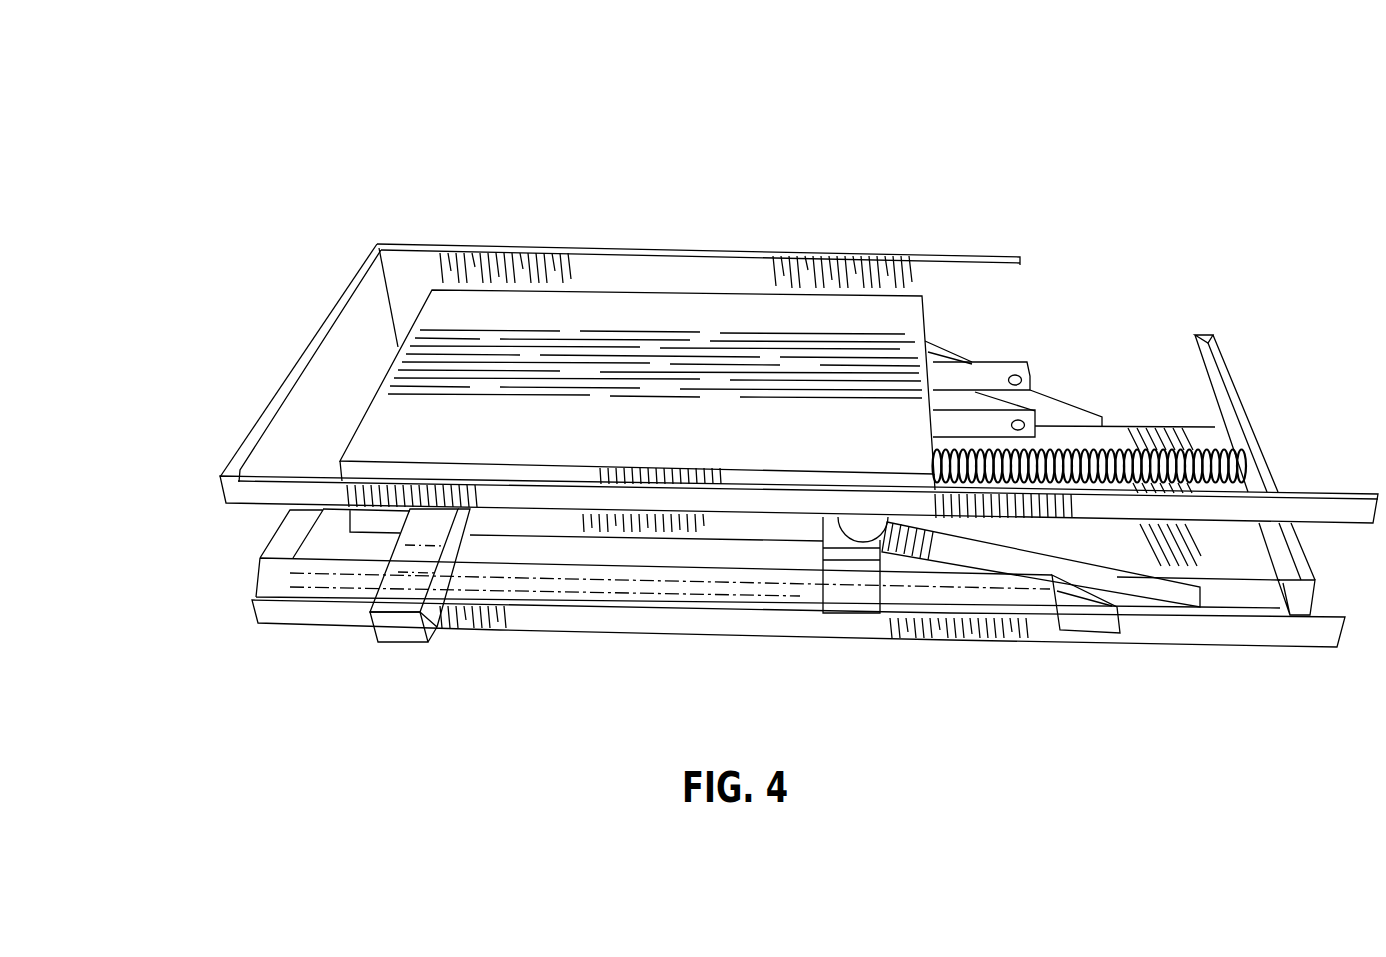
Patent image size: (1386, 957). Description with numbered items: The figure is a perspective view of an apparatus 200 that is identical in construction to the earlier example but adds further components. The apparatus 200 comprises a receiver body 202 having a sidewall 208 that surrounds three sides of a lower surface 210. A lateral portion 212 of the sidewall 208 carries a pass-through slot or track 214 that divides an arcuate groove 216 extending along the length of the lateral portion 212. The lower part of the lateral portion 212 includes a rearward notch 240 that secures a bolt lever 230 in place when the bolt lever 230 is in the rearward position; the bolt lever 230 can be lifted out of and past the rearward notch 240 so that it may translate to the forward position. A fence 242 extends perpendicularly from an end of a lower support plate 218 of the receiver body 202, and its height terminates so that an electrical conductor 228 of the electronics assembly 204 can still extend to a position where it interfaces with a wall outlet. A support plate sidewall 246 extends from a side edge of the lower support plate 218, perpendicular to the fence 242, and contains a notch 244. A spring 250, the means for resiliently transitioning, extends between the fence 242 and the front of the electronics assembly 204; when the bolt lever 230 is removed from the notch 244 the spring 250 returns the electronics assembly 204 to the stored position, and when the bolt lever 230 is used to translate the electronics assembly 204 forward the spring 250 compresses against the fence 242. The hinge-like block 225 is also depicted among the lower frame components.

The apparatus 200 is at (822, 115).
The receiver body 202 is at (198, 567).
The electronics assembly 204 is at (693, 313).
The sidewall 208 is at (620, 263).
The lower surface 210 is at (785, 568).
The lateral portion 212 is at (235, 487).
The pass-through slot or track 214 is at (253, 518).
The arcuate groove 216 is at (283, 580).
The lower support plate 218 is at (1147, 430).
The hinge block 225 is at (850, 588).
The electrical conductor 228 is at (1025, 370).
The bolt lever 230 is at (404, 622).
The rearward notch 240 is at (383, 572).
The fence 242 is at (1233, 405).
The notch 244 is at (1085, 623).
The support plate sidewall 246 is at (1262, 637).
The spring 250 is at (1105, 447).